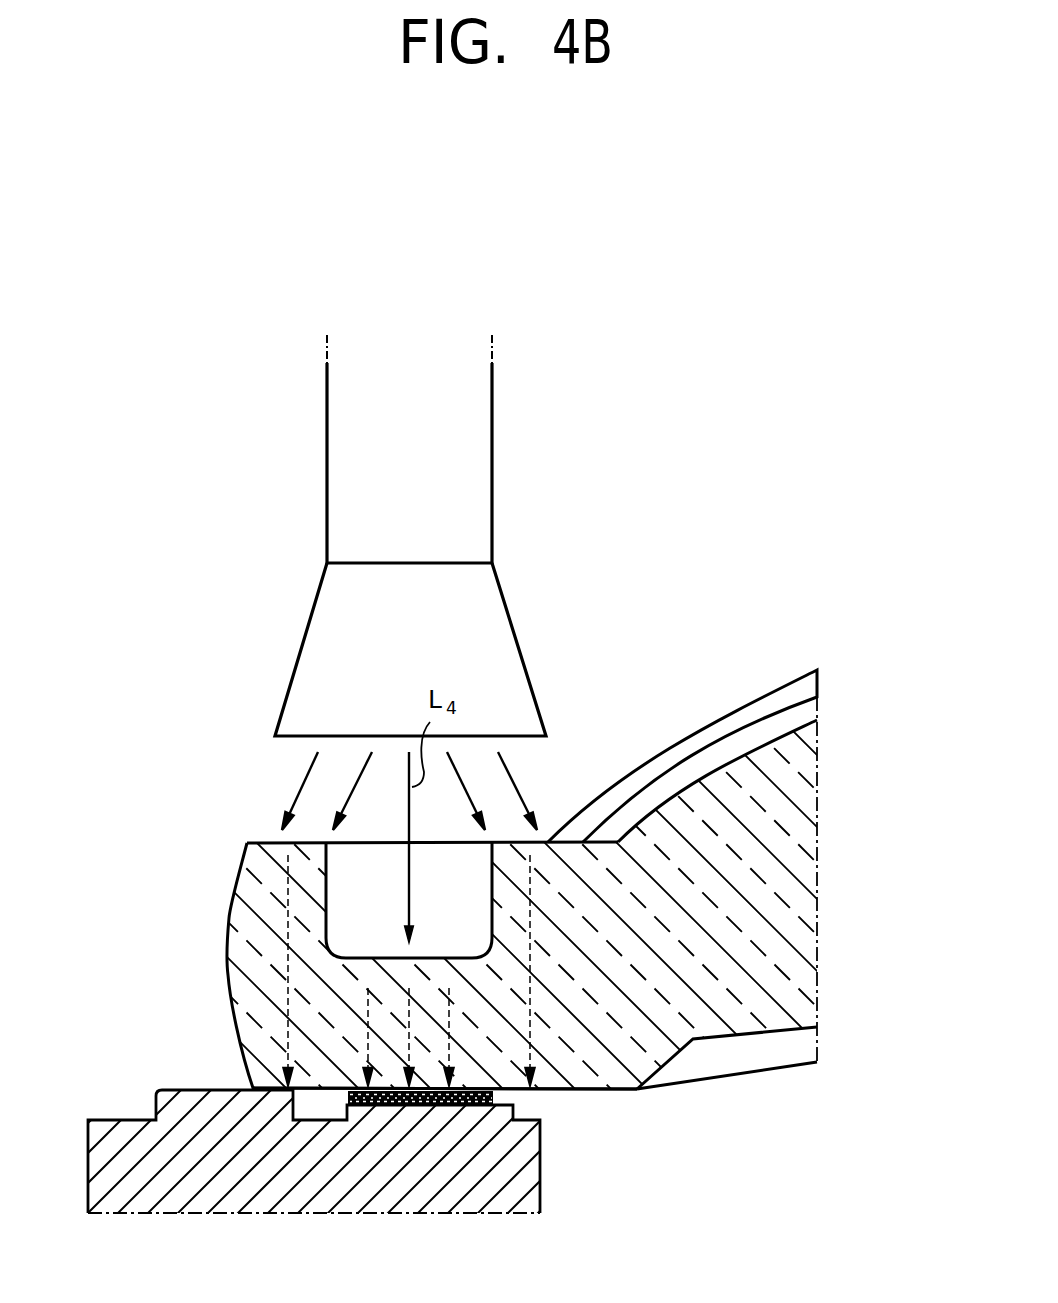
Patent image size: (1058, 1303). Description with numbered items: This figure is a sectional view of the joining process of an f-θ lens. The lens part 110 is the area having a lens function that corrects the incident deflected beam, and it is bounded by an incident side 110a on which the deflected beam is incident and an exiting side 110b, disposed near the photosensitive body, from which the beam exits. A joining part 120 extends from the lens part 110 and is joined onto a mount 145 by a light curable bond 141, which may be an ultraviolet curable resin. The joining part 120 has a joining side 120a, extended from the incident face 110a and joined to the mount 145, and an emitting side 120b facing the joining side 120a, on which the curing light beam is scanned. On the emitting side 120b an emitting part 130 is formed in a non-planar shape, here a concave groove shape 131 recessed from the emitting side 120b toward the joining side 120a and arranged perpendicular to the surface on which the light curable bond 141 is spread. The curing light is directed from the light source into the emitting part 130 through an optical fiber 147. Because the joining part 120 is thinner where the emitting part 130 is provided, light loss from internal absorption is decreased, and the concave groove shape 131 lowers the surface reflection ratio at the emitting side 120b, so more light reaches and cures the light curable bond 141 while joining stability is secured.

The lens part 110 is at (797, 895).
The incident side 110a is at (748, 1040).
The exiting side 110b is at (762, 748).
The joining part 120 is at (255, 976).
The joining side 120a is at (292, 1100).
The emitting side 120b is at (268, 842).
The emitting part 130 is at (391, 853).
The concave groove shape 131 is at (490, 887).
The light curable bond 141 is at (431, 1107).
The mount 145 is at (533, 1166).
The optical fiber 147 is at (487, 462).